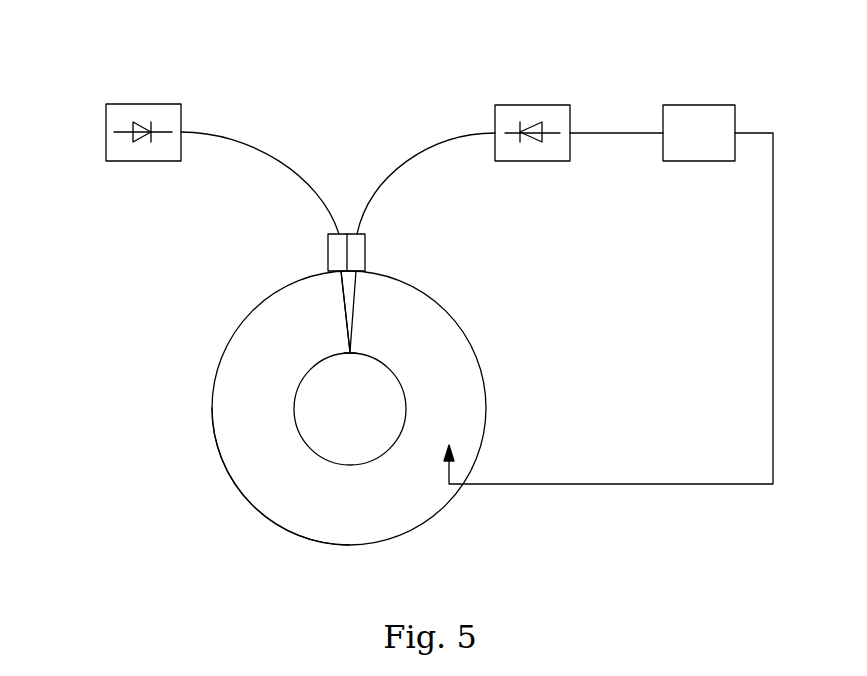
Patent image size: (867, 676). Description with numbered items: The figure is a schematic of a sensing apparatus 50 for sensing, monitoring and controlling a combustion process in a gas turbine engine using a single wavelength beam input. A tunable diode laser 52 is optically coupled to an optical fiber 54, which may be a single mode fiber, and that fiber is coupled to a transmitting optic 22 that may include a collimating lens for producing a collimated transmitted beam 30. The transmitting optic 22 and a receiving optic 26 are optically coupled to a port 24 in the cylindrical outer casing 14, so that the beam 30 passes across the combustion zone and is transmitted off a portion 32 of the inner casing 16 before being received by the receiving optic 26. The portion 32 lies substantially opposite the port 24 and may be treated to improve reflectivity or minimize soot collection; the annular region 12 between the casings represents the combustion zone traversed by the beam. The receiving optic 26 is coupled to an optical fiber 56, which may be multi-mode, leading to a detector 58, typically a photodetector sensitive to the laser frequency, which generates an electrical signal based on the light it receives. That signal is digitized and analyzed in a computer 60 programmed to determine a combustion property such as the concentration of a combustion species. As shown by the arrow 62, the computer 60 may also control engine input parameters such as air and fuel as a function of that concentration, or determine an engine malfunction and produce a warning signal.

The annular body 12 is at (265, 447).
The cylindrical outer casing 14 is at (260, 300).
The inner casing 16 is at (406, 412).
The transmitting optic 22 is at (338, 262).
The port 24 is at (346, 295).
The receiving optic 26 is at (357, 243).
The transmitted beam 30 is at (343, 312).
The portion of the inner casing 32 is at (351, 351).
The sensing apparatus 50 is at (122, 390).
The tunable diode laser 52 is at (143, 104).
The optical fiber 54 is at (265, 148).
The optical fiber 56 is at (413, 150).
The detector 58 is at (533, 105).
The computer 60 is at (698, 105).
The arrow 62 is at (447, 468).